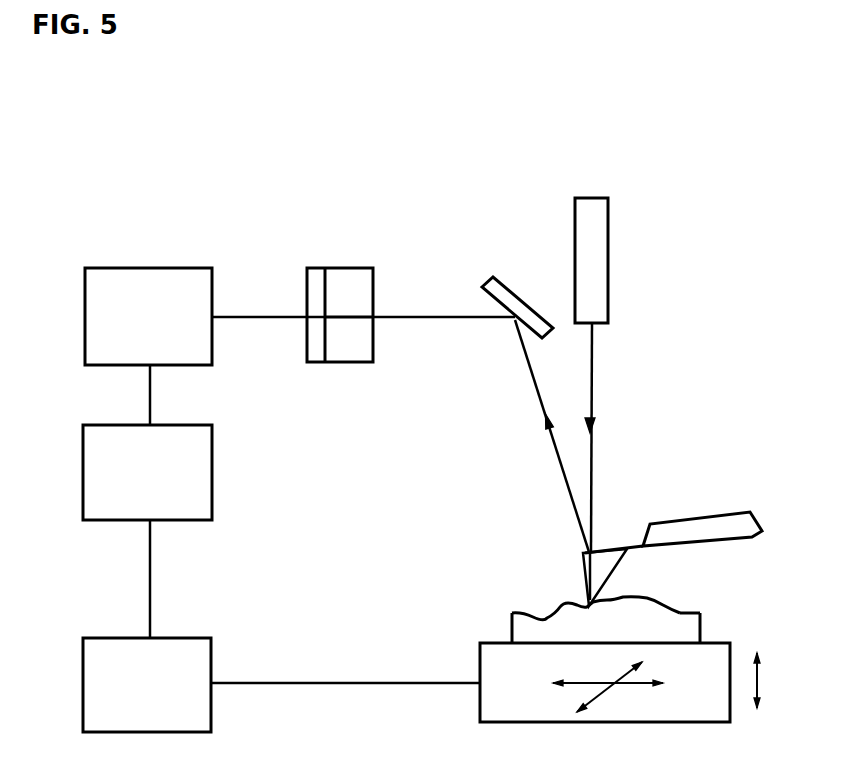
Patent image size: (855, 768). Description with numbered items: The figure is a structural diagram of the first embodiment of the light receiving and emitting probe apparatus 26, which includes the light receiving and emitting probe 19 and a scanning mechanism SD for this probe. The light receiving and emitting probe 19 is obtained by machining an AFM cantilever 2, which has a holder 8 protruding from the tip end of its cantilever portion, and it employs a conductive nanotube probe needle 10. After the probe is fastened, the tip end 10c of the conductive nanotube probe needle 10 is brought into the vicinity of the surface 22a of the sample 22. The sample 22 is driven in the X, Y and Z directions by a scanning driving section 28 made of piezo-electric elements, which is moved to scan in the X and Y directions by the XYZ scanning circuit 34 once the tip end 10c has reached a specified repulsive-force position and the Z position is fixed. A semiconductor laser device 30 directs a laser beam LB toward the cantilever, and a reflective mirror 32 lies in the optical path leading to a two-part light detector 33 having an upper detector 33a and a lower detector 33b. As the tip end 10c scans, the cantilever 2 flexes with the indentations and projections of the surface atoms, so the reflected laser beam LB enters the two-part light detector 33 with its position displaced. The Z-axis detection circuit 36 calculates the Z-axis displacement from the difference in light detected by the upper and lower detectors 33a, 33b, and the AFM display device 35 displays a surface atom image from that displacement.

The light receiving and emitting probe apparatus 26 is at (415, 177).
The Z-axis detection circuit 36 is at (148, 316).
The AFM display device 35 is at (147, 472).
The XYZ scanning circuit 34 is at (147, 685).
The scanning mechanism SD is at (224, 481).
The two-part light detector 33 is at (346, 270).
The upper detector 33a is at (352, 290).
The lower detector 33b is at (352, 342).
The reflective mirror 32 is at (516, 298).
The semiconductor laser device 30 is at (588, 268).
The laser beam LB is at (597, 428).
The light receiving and emitting probe 19 is at (702, 493).
The cantilever 2 is at (615, 546).
The conductive nanotube probe needle 10 is at (592, 585).
The holder 8 is at (584, 563).
The sample 22 is at (609, 605).
The surface of the sample 22a is at (517, 609).
The tip end 10c is at (583, 605).
The scanning driving section 28 is at (618, 708).